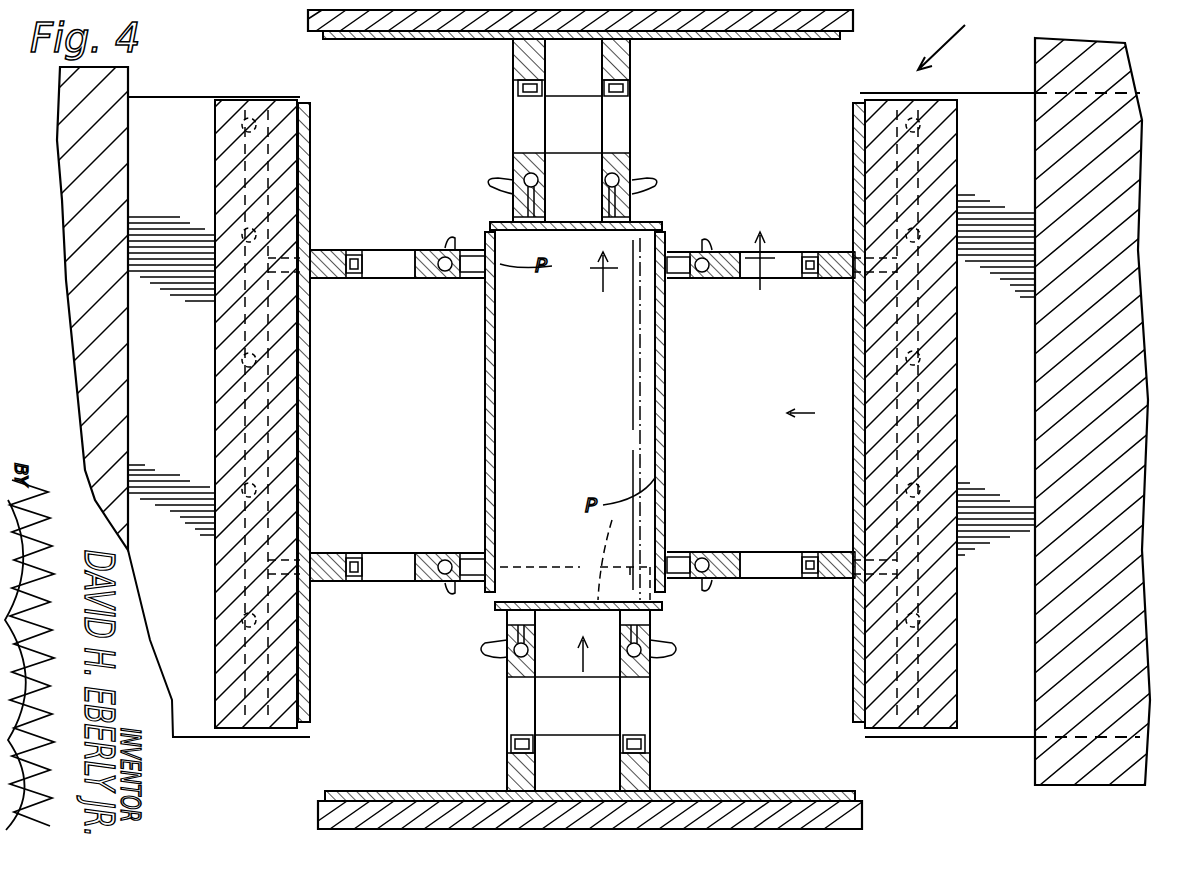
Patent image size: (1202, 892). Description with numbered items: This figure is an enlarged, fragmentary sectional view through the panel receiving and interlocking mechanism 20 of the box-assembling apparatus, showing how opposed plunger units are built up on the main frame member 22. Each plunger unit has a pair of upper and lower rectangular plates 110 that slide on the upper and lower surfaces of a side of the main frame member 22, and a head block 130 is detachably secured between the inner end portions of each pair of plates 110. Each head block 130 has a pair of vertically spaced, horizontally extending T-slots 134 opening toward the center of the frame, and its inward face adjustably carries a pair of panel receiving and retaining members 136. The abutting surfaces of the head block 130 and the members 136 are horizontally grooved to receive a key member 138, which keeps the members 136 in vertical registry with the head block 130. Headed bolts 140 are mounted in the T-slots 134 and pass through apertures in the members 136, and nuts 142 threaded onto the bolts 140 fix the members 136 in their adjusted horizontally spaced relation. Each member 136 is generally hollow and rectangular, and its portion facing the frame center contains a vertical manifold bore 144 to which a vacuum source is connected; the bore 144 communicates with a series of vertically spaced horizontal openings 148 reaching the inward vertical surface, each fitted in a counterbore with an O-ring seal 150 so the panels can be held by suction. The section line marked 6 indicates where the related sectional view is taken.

The panel receiving and interlocking mechanism 20 is at (958, 38).
The main frame member 22 is at (82, 365).
The upper and lower rectangular plates 110 is at (170, 100).
The head block 130 is at (440, 40).
The T-slots 134 is at (303, 428).
The key member 138 is at (305, 358).
The panel receiving and retaining members 136 is at (605, 125).
The headed bolts 140 is at (542, 88).
The nuts 142 is at (545, 95).
The manifold bore 144 is at (545, 175).
The openings 148 is at (508, 203).
The O-ring seal 150 is at (618, 228).
The section line 6- 6 is at (682, 277).